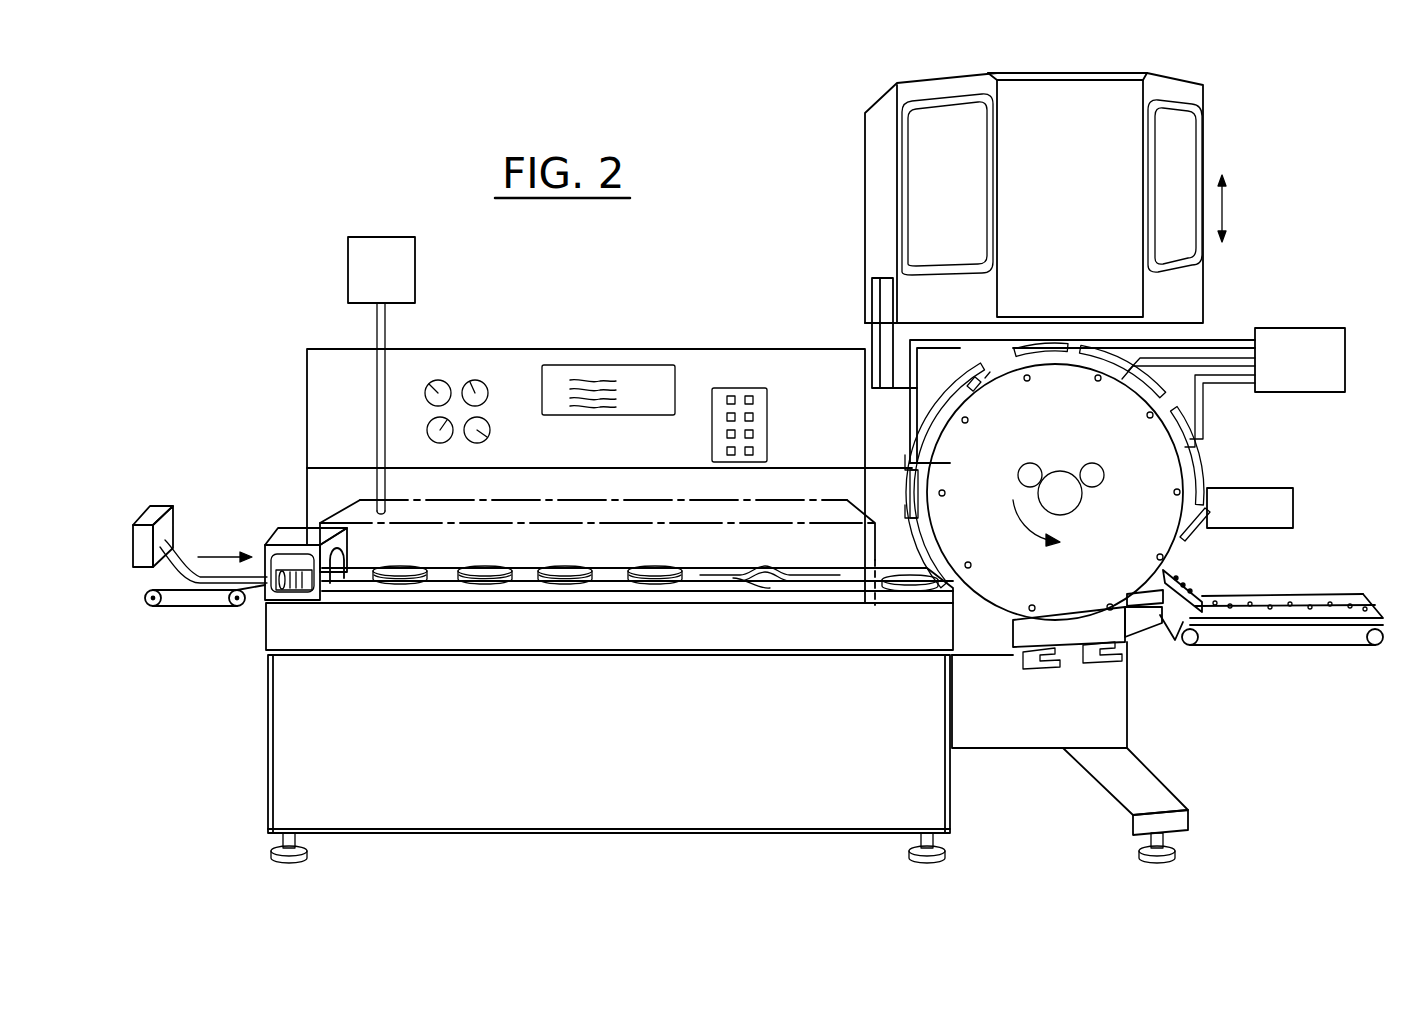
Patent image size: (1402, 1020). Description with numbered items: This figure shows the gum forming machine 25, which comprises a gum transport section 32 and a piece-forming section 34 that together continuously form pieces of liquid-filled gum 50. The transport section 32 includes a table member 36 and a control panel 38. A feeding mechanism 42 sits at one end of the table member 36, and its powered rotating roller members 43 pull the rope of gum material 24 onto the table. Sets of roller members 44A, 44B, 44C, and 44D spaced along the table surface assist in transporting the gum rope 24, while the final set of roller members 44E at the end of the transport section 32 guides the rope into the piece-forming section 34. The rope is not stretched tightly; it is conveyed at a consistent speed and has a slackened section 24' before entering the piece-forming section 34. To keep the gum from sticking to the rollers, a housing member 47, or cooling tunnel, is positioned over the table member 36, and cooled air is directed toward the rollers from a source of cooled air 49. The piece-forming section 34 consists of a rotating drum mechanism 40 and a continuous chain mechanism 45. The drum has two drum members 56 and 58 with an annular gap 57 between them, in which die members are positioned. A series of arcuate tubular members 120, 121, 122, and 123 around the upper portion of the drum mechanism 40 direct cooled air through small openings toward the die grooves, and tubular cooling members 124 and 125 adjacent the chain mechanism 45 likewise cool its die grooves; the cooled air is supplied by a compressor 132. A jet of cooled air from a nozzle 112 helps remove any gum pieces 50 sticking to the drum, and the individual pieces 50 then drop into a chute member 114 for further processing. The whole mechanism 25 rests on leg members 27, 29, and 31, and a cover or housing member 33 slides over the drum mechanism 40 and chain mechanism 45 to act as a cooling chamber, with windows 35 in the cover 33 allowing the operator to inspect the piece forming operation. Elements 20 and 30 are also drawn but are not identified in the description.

The product feed source 20 is at (158, 510).
The rope of gum material 24 is at (637, 606).
The slackened section 24' is at (781, 605).
The gum forming machine 25 is at (222, 735).
The leg member 27 is at (270, 855).
The leg member 29 is at (950, 857).
The infeed conveyor 30 is at (190, 607).
The leg member 31 is at (1178, 852).
The gum transport section 32 is at (656, 346).
The housing member 33 is at (870, 178).
The piece-forming section 34 is at (968, 612).
The windows 35 is at (1165, 188).
The table member 36 is at (775, 587).
The control panel 38 is at (466, 360).
The rotating drum mechanism 40 is at (1150, 471).
The feeding mechanism 42 is at (293, 530).
The powered rotating roller members 43 is at (308, 590).
The roller members 44A is at (397, 566).
The roller members 44B is at (484, 566).
The roller members 44C is at (562, 566).
The roller members 44D is at (661, 565).
The roller members 44E is at (905, 575).
The continuous chain mechanism 45 is at (1140, 625).
The housing member 47 is at (612, 498).
The source of cooled air 49 is at (348, 258).
The pieces of liquid-filled gum 50 is at (1186, 572).
The drum member 56 is at (935, 404).
The annular gap 57 is at (983, 383).
The drum member 58 is at (948, 440).
The nozzle 112 is at (1283, 510).
The chute member 114 is at (1207, 615).
The arcuate tubular member 120 is at (905, 480).
The arcuate tubular member 121 is at (1040, 358).
The arcuate tubular member 122 is at (1097, 367).
The arcuate tubular member 123 is at (1185, 427).
The tubular cooling member 124 is at (1045, 670).
The tubular cooling member 125 is at (1103, 660).
The compressor 132 is at (1287, 328).